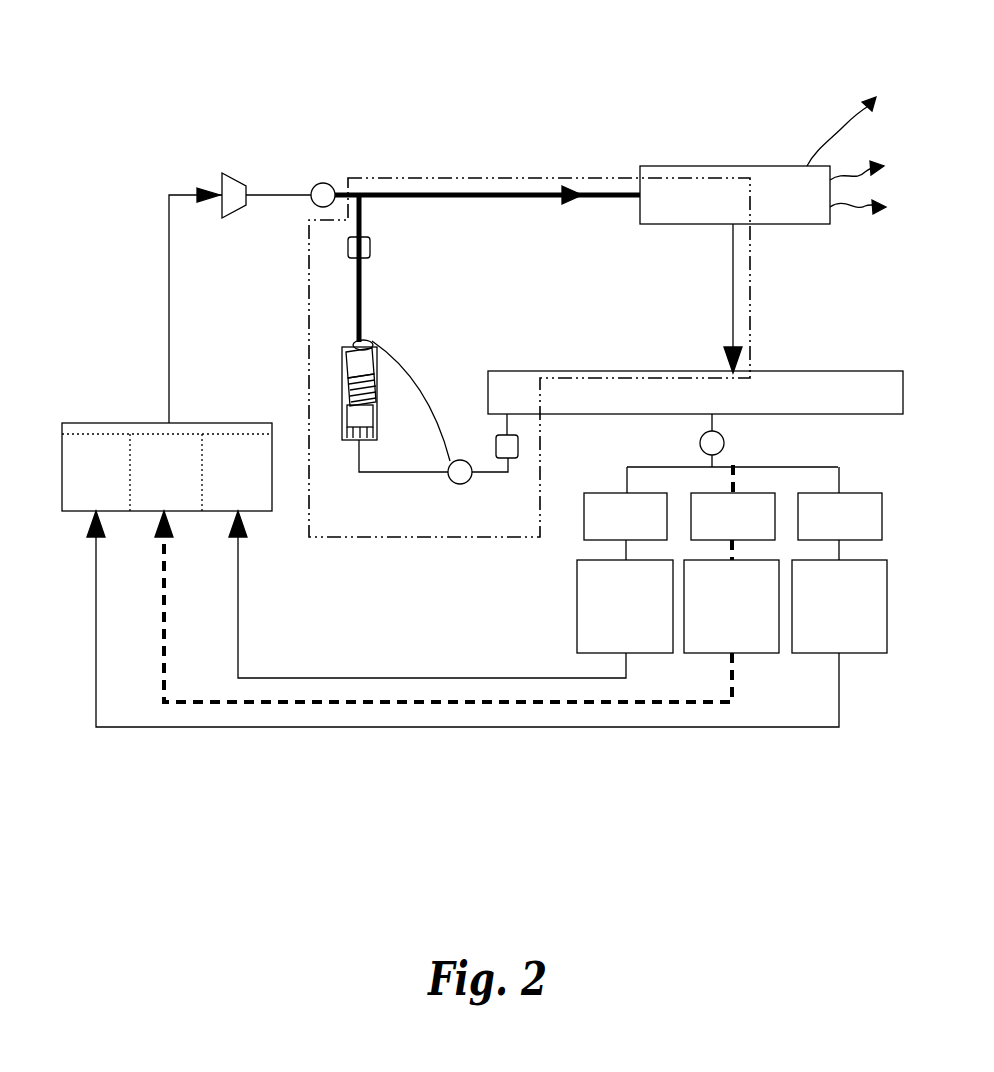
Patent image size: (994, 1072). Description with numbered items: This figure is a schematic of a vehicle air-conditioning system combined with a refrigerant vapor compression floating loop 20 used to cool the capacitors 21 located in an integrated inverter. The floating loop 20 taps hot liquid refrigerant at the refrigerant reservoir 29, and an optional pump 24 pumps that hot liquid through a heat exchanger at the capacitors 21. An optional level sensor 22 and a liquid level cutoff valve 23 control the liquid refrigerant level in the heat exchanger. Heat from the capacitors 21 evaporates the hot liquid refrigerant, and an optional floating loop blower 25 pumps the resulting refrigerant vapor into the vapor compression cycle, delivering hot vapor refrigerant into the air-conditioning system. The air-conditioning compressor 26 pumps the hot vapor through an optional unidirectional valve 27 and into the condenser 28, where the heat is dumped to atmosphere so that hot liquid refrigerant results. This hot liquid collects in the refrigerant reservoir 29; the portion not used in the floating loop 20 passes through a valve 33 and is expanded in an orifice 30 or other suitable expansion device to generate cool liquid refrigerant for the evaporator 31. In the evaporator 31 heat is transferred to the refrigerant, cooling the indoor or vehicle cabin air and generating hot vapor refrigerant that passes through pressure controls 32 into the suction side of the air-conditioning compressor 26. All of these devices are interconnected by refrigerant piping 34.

The refrigerant vapor compression floating loop 20 is at (507, 178).
The capacitors 21 is at (345, 395).
The level sensor 22 is at (365, 345).
The liquid level cutoff valve 23 is at (452, 483).
The pump 24 is at (515, 444).
The floating loop blower 25 is at (370, 243).
The air-conditioning compressor 26 is at (228, 178).
The unidirectional valve 27 is at (320, 183).
The condenser 28 is at (765, 185).
The refrigerant reservoir 29 is at (770, 394).
The orifice 30 is at (587, 533).
The evaporator 31 is at (590, 612).
The pressure controls 32 is at (252, 490).
The valve 33 is at (720, 443).
The refrigerant piping 34 is at (169, 305).